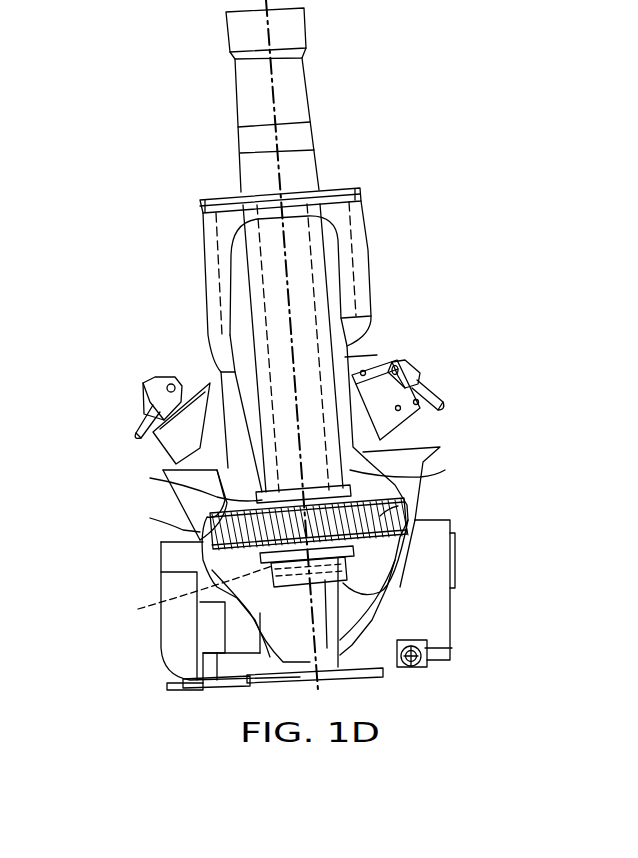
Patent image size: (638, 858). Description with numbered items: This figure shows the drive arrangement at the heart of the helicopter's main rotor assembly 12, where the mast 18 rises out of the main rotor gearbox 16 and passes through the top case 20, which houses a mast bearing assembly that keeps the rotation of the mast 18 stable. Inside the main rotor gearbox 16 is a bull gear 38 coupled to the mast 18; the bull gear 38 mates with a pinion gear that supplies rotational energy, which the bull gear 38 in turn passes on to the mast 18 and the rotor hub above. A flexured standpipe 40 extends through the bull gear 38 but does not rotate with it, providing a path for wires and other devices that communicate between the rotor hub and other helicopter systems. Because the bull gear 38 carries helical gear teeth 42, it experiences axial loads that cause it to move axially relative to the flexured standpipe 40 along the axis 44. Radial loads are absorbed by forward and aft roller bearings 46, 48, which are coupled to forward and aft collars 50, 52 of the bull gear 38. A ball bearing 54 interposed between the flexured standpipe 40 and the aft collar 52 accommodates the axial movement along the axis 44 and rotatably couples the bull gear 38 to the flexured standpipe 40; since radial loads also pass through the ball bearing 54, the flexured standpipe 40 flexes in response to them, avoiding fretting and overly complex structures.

The main rotor assembly 12 is at (104, 204).
The main rotor gearbox 16 is at (162, 648).
The mast 18 is at (236, 97).
The top case 20 is at (203, 224).
The bull gear 38 is at (200, 532).
The flexured standpipe 40 is at (390, 660).
The helical gear teeth 42 is at (400, 508).
The axis 44 is at (288, 275).
The forward roller bearing 46 is at (203, 487).
The aft roller bearing 48 is at (452, 568).
The forward collar 50 is at (433, 483).
The aft collar 52 is at (380, 590).
The ball bearing 54 is at (186, 595).